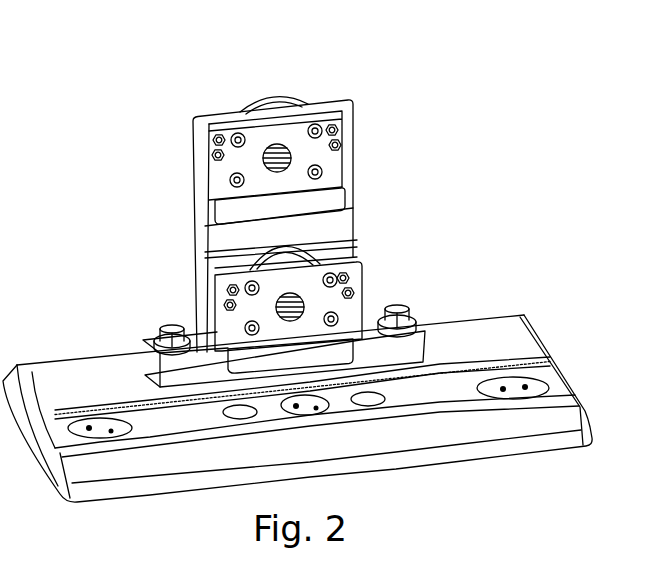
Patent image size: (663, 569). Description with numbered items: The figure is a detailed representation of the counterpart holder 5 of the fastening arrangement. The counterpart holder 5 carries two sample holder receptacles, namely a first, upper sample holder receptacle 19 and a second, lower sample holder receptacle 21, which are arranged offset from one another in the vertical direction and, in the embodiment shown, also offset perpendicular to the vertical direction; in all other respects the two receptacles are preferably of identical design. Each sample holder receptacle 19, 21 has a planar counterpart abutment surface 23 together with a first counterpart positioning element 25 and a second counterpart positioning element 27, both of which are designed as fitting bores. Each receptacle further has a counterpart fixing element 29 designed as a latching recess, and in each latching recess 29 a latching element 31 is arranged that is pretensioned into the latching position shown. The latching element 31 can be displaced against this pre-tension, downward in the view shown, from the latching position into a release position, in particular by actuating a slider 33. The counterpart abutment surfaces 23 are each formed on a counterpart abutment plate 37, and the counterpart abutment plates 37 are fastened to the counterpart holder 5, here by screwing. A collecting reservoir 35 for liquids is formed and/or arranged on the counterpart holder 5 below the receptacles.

The counterpart holder 5 is at (333, 73).
The first, upper sample holder receptacle 19 is at (352, 181).
The second, lower sample holder receptacle 21 is at (374, 297).
The counterpart abutment surface 23 is at (352, 174).
The first counterpart positioning element 25 is at (211, 150).
The second counterpart positioning element 27 is at (342, 136).
The counterpart fixing element 29 is at (279, 144).
The latching element 31 is at (217, 133).
The slider 33 is at (262, 112).
The collecting reservoir 35 is at (63, 410).
The counterpart abutment plate 37 is at (351, 101).